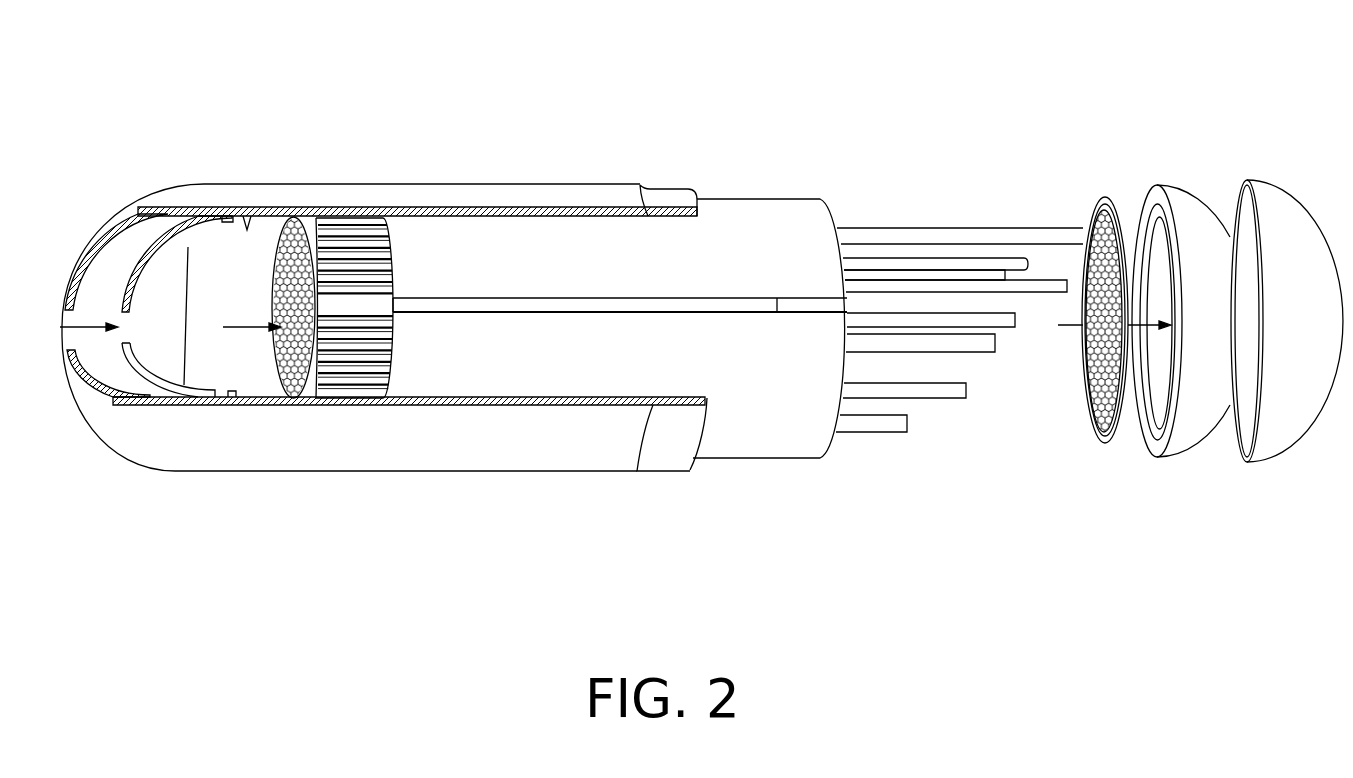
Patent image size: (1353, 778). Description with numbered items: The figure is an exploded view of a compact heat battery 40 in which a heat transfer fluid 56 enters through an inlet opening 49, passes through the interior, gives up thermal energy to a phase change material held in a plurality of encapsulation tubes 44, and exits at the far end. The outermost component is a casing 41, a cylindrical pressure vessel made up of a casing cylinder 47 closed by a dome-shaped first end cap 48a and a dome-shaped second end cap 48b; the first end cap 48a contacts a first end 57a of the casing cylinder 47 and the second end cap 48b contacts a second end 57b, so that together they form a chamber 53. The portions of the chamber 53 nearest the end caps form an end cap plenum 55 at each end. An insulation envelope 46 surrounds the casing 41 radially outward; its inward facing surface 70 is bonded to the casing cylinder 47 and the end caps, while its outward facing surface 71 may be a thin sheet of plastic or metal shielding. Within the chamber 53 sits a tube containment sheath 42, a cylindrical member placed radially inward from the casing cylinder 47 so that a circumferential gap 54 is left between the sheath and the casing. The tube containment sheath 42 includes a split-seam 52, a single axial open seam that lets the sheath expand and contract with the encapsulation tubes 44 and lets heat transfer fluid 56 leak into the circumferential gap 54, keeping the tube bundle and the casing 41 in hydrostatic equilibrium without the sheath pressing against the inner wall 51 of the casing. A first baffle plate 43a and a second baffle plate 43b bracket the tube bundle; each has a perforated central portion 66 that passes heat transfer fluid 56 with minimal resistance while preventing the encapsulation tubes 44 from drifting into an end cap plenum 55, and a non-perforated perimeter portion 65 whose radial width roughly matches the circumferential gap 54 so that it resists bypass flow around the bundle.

The compact heat battery 40 is at (200, 100).
The casing 41 is at (645, 183).
The tube containment sheath 42 is at (755, 452).
The first baffle plate 43a is at (272, 261).
The second baffle plate 43b is at (1096, 203).
The encapsulation tubes 44 is at (890, 425).
The insulation envelope 46 is at (166, 180).
The casing cylinder 47 is at (667, 450).
The first end cap 48a is at (152, 386).
The second end cap 48b is at (1183, 442).
The inlet opening 49 is at (115, 340).
The inner wall 51 is at (241, 217).
The split-seam 52 is at (810, 299).
The chamber 53 is at (608, 283).
The circumferential gap 54 is at (283, 210).
The end cap plenum 55 is at (171, 321).
The heat transfer fluid 56 is at (78, 322).
The first end of the casing cylinder 57a is at (258, 195).
The second end of the casing cylinder 57b is at (682, 185).
The non-perforated perimeter portion 65 is at (322, 392).
The perforated central portion 66 is at (270, 349).
The inward facing surface 70 is at (137, 218).
The outward facing surface 71 is at (108, 215).